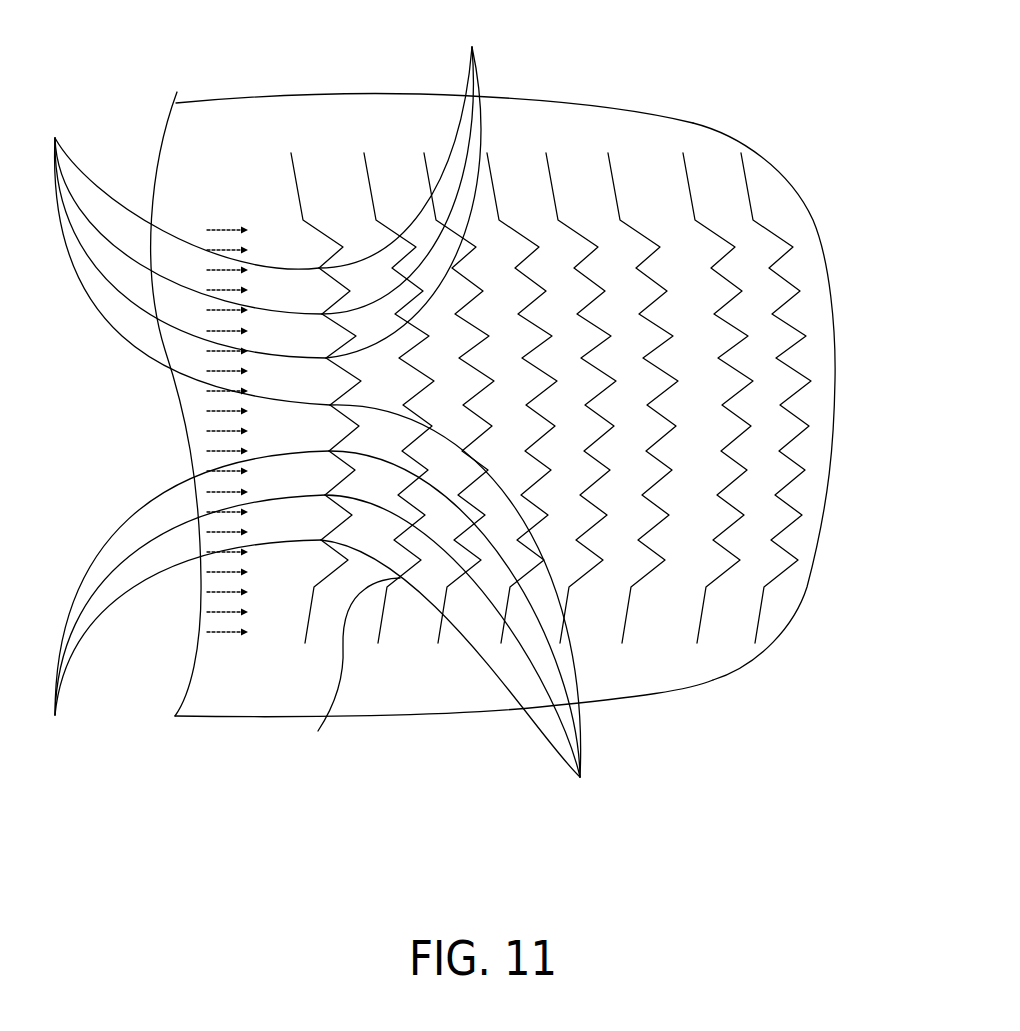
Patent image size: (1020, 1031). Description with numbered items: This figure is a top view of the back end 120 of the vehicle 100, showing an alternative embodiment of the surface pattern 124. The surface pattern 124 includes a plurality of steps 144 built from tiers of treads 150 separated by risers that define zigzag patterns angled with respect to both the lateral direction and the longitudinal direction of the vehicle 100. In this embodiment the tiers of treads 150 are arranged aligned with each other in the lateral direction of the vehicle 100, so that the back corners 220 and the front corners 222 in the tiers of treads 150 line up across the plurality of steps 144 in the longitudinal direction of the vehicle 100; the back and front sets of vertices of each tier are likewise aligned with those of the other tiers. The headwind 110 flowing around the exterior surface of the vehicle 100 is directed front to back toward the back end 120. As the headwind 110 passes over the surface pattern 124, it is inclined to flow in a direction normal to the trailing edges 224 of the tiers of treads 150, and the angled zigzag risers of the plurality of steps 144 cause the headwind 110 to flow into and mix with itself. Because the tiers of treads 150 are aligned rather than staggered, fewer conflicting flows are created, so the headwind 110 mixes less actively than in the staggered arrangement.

The vehicle 100 is at (488, 412).
The headwind 110 is at (228, 228).
The back end 120 is at (704, 688).
The surface pattern 124 is at (540, 391).
The plurality of steps 144 is at (592, 121).
The tiers of treads 150 is at (335, 177).
The back corners 220 is at (460, 415).
The front corners 222 is at (181, 427).
The trailing edges 224 is at (318, 731).